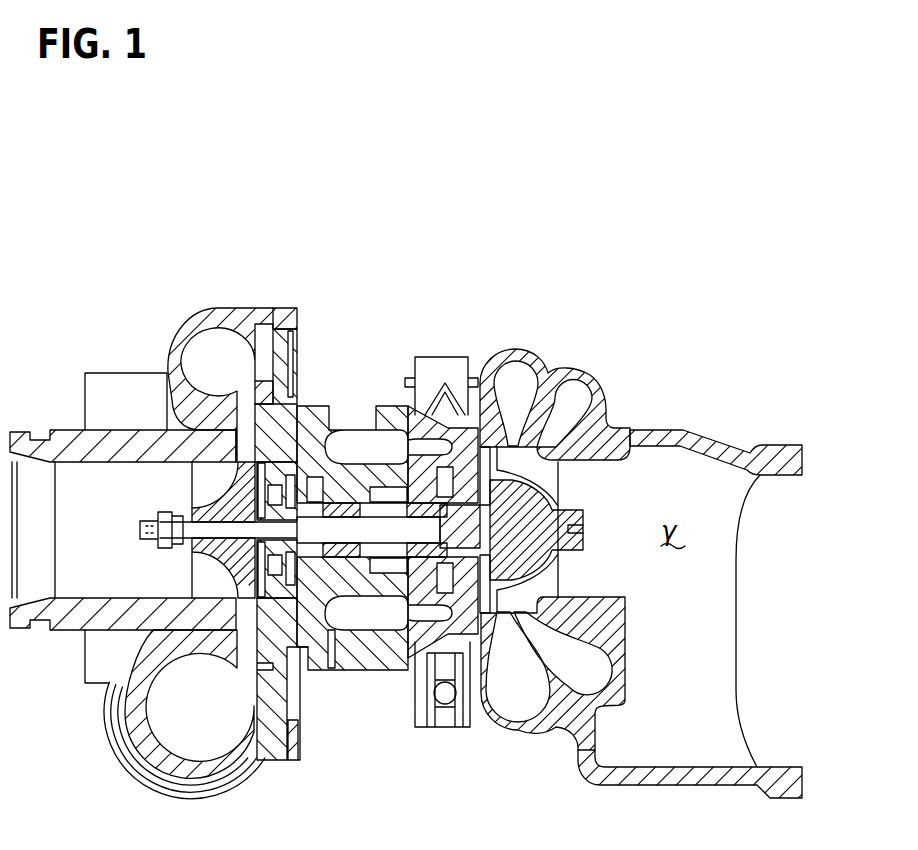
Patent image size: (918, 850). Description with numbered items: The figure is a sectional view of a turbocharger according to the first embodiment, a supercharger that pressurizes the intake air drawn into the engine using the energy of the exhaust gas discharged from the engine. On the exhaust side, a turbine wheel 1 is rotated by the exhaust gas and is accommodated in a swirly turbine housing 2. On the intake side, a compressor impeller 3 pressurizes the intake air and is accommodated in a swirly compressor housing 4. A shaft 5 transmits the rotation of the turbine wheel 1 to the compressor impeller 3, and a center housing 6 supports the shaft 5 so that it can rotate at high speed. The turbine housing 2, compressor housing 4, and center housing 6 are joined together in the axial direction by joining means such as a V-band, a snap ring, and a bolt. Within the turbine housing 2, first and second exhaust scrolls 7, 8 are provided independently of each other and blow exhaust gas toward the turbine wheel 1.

The turbine wheel 1 is at (558, 485).
The turbine housing 2 is at (682, 430).
The compressor impeller 3 is at (190, 482).
The compressor housing 4 is at (180, 332).
The shaft 5 is at (382, 523).
The center housing 6 is at (322, 407).
The first exhaust scroll 7 is at (517, 372).
The second exhaust scroll 8 is at (575, 400).